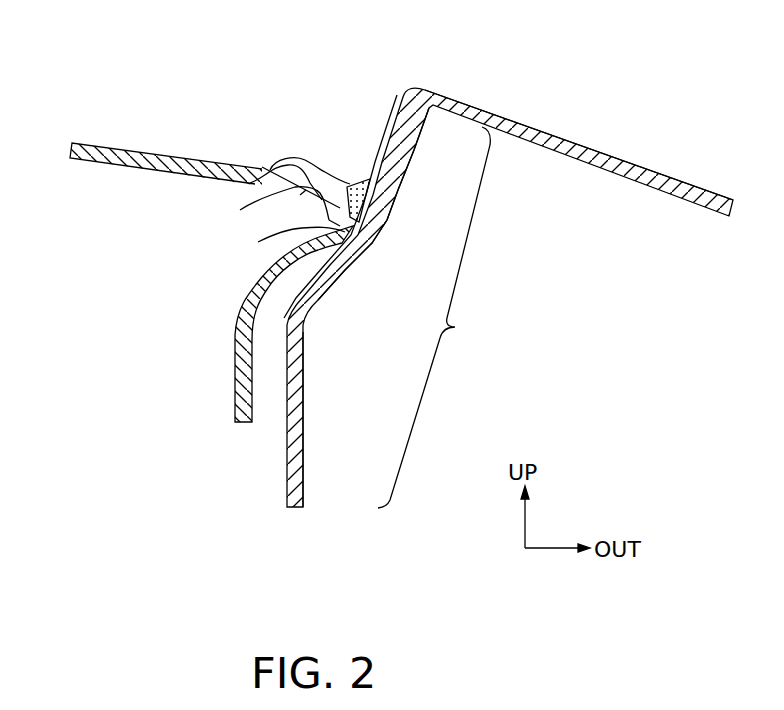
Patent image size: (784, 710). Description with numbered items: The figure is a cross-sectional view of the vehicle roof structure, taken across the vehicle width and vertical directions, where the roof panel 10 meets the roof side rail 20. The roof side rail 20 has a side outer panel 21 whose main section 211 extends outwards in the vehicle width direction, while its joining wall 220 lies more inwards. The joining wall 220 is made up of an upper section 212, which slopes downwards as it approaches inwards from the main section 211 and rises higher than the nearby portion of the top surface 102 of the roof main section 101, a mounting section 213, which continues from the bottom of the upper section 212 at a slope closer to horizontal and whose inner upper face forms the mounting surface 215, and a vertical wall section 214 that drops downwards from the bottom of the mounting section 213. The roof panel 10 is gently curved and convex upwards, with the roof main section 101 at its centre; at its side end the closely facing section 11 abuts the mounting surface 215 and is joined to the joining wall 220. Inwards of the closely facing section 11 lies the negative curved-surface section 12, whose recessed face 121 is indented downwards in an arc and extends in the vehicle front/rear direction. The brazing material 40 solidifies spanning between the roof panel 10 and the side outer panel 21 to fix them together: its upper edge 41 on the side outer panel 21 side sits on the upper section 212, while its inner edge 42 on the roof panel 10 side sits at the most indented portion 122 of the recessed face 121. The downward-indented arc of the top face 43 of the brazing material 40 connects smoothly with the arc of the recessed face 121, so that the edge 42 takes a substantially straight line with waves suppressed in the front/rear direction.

The roof panel 10 is at (103, 101).
The roof main section 101 is at (88, 143).
The top surface 102 is at (262, 167).
The closely facing section 11 is at (325, 248).
The negative curved-surface section 12 is at (320, 178).
The recessed face 121 is at (285, 181).
The most indented portion 122 is at (300, 195).
The roof side rail 20 is at (700, 135).
The side outer panel 21 is at (614, 135).
The main section 211 is at (527, 126).
The upper section 212 is at (415, 110).
The mounting section 213 is at (309, 323).
The vertical wall section 214 is at (308, 321).
The mounting surface 215 is at (258, 242).
The joining wall 220 is at (443, 317).
The brazing material 40 is at (357, 180).
The edge 41 is at (397, 95).
The edge 42 is at (340, 219).
The top face 43 is at (362, 178).